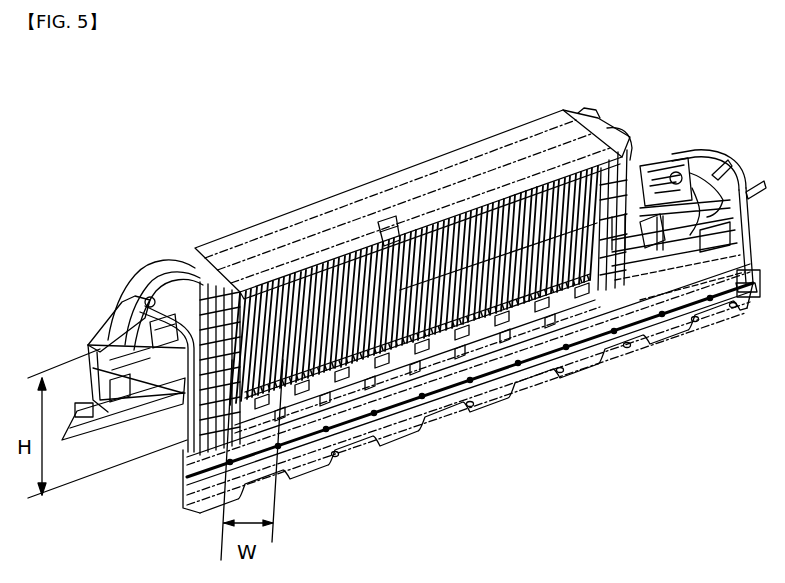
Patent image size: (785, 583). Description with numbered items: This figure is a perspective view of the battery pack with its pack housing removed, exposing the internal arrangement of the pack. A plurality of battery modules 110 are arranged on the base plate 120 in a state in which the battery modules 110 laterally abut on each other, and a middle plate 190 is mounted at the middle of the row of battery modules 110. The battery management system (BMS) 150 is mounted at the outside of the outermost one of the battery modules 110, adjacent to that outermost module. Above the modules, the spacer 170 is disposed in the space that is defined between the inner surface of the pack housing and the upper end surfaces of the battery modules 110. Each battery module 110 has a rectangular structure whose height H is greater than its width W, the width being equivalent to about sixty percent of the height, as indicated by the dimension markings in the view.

The battery module 110 is at (415, 351).
The base plate 120 is at (411, 365).
The battery management system (BMS) 150 is at (682, 198).
The spacer 170 is at (411, 203).
The middle plate 190 is at (417, 389).